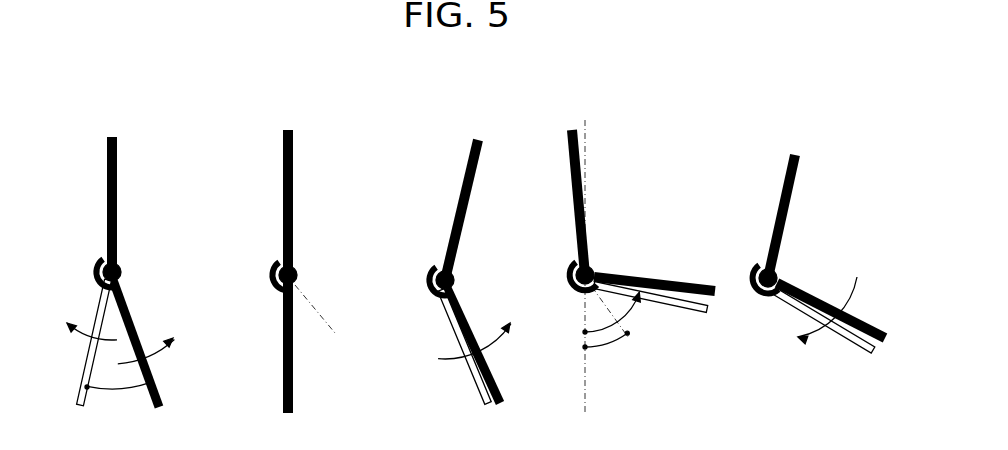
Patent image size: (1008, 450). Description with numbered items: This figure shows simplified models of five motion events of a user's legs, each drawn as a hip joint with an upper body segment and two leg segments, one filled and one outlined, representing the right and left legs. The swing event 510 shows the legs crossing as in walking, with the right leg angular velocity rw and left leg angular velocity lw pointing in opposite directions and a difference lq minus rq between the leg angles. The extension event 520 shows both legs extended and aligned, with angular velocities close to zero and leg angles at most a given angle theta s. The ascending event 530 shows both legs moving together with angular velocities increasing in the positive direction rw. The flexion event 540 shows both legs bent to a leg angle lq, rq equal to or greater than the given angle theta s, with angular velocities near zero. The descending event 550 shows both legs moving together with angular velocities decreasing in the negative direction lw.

The swing event 510 is at (112, 135).
The extension event 520 is at (290, 130).
The ascending event 530 is at (478, 140).
The flexion event 540 is at (572, 130).
The descending event 550 is at (795, 155).